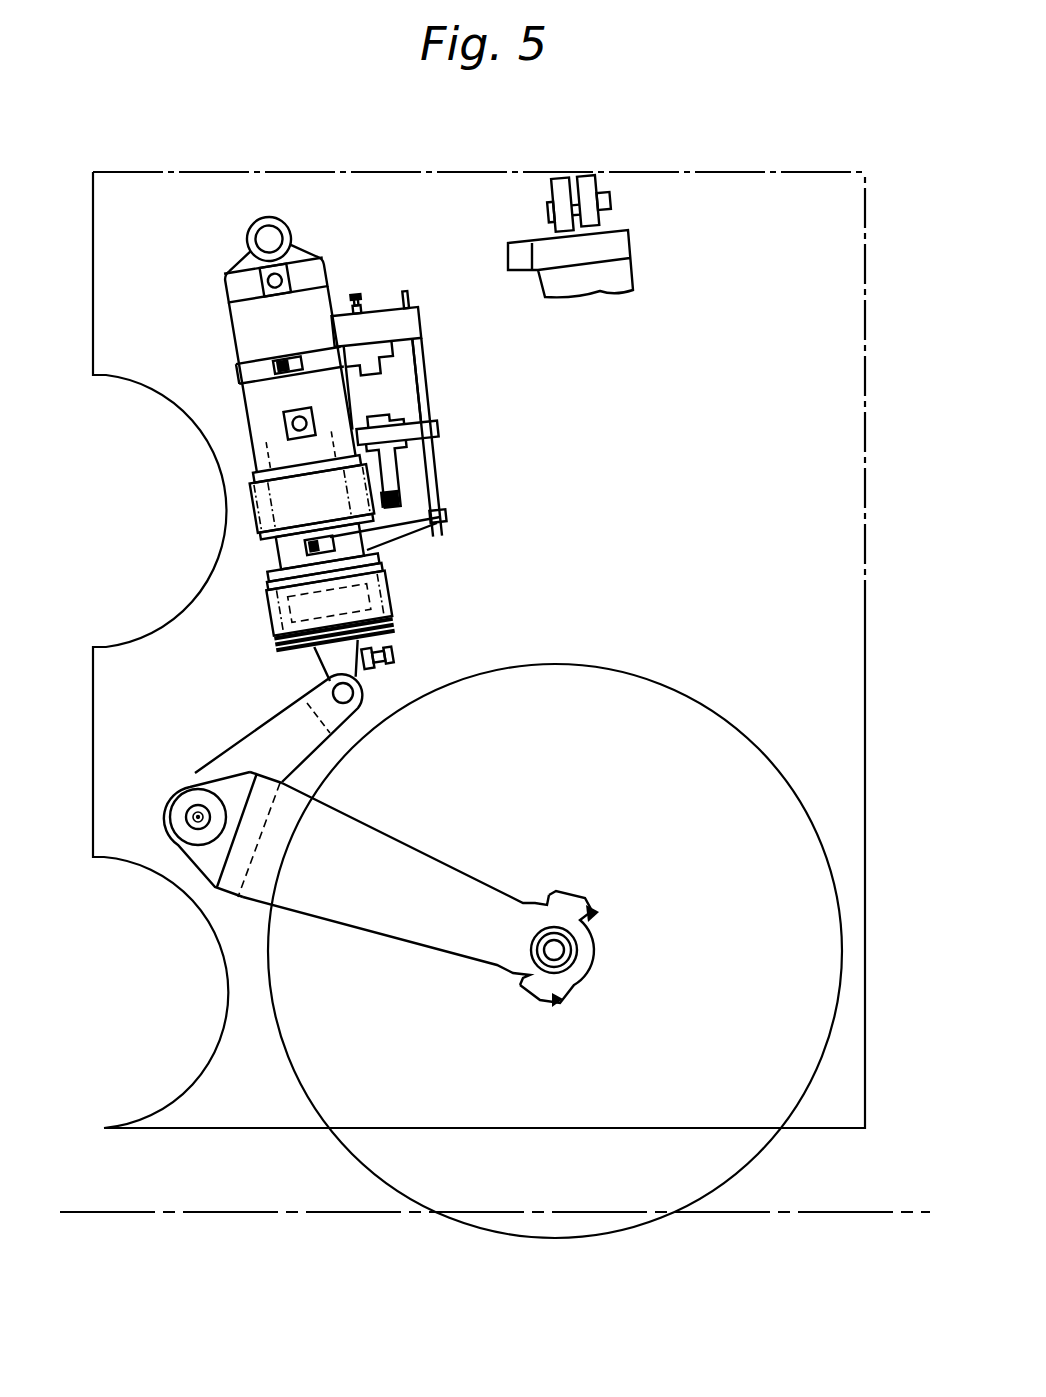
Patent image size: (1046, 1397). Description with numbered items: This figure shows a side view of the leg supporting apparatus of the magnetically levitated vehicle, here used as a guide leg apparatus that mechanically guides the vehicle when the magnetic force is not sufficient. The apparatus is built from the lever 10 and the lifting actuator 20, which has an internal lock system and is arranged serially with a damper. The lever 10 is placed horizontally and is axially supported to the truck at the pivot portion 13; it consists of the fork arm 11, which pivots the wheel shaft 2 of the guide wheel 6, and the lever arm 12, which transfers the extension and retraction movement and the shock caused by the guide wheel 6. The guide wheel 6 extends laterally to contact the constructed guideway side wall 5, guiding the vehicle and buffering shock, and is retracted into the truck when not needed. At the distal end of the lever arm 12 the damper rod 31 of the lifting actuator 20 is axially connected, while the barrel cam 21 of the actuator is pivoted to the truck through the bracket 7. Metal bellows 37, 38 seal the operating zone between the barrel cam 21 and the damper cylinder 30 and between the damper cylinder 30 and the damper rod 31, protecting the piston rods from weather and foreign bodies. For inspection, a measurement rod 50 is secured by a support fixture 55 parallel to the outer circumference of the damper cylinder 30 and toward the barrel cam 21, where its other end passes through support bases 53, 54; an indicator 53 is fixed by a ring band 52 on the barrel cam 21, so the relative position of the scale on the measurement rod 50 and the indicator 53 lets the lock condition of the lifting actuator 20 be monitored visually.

The wheel shaft 2 is at (565, 950).
The guideway side wall 5 is at (870, 1212).
The guide wheel 6 is at (625, 678).
The bracket 7 is at (590, 185).
The lever 10 is at (190, 762).
The fork arm 11 is at (428, 866).
The lever arm 12 is at (272, 735).
The pivot portion 13 is at (196, 820).
The lifting actuator 20 is at (222, 331).
The barrel cam 21 is at (228, 283).
The damper cylinder 30 is at (270, 567).
The damper rod 31 is at (385, 612).
The metal bellows 37 is at (253, 508).
The metal bellows 38 is at (275, 643).
The measurement rod 50 is at (420, 380).
The ring band 52 is at (248, 372).
The indicator 53 is at (386, 308).
The support base 54 is at (440, 433).
The support fixture 55 is at (420, 528).